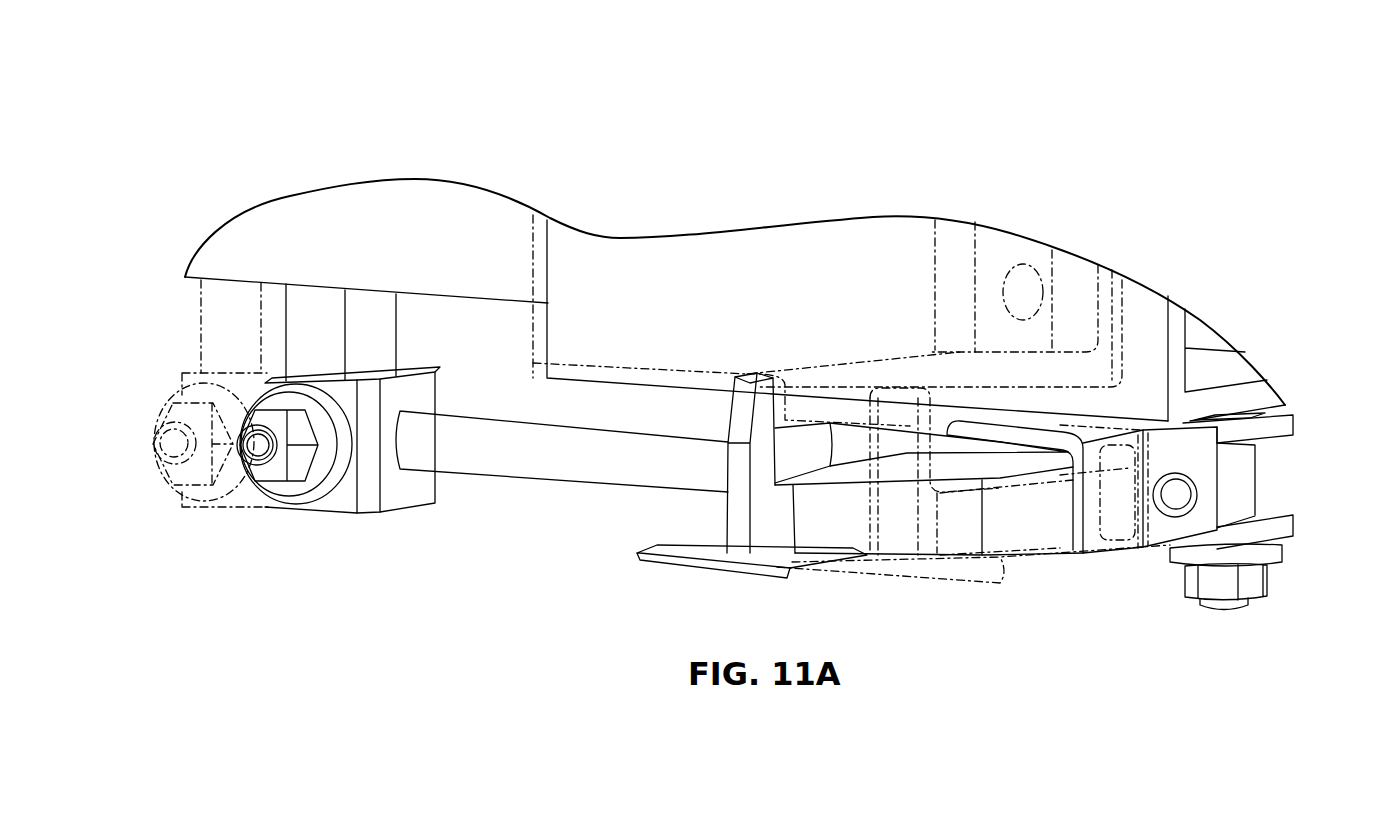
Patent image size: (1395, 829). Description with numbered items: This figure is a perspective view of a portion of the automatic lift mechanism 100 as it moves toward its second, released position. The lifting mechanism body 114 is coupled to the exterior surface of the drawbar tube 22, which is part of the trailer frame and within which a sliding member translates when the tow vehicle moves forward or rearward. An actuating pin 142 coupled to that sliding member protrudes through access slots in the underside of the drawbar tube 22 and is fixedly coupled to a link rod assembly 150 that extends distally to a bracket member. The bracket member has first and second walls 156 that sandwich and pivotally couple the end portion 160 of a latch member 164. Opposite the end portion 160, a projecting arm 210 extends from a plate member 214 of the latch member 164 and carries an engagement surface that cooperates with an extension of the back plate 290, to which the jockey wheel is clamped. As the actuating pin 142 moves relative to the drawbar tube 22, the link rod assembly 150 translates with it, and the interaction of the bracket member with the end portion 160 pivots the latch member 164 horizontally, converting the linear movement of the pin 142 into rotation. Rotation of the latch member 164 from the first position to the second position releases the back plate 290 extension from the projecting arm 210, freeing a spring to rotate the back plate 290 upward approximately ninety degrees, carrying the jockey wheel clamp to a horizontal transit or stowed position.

The automatic lift mechanism 100 is at (1119, 104).
The drawbar tube 22 is at (417, 197).
The back plate 290 is at (1120, 290).
The lifting mechanism body 114 is at (1260, 394).
The actuating pin 142 is at (378, 350).
The link rod assembly 150 is at (526, 464).
The projecting arm 210 is at (738, 517).
The plate member 214 is at (681, 560).
The latch member 164 is at (835, 518).
The end portion 160 is at (1243, 479).
The first and second walls 156 is at (1292, 526).